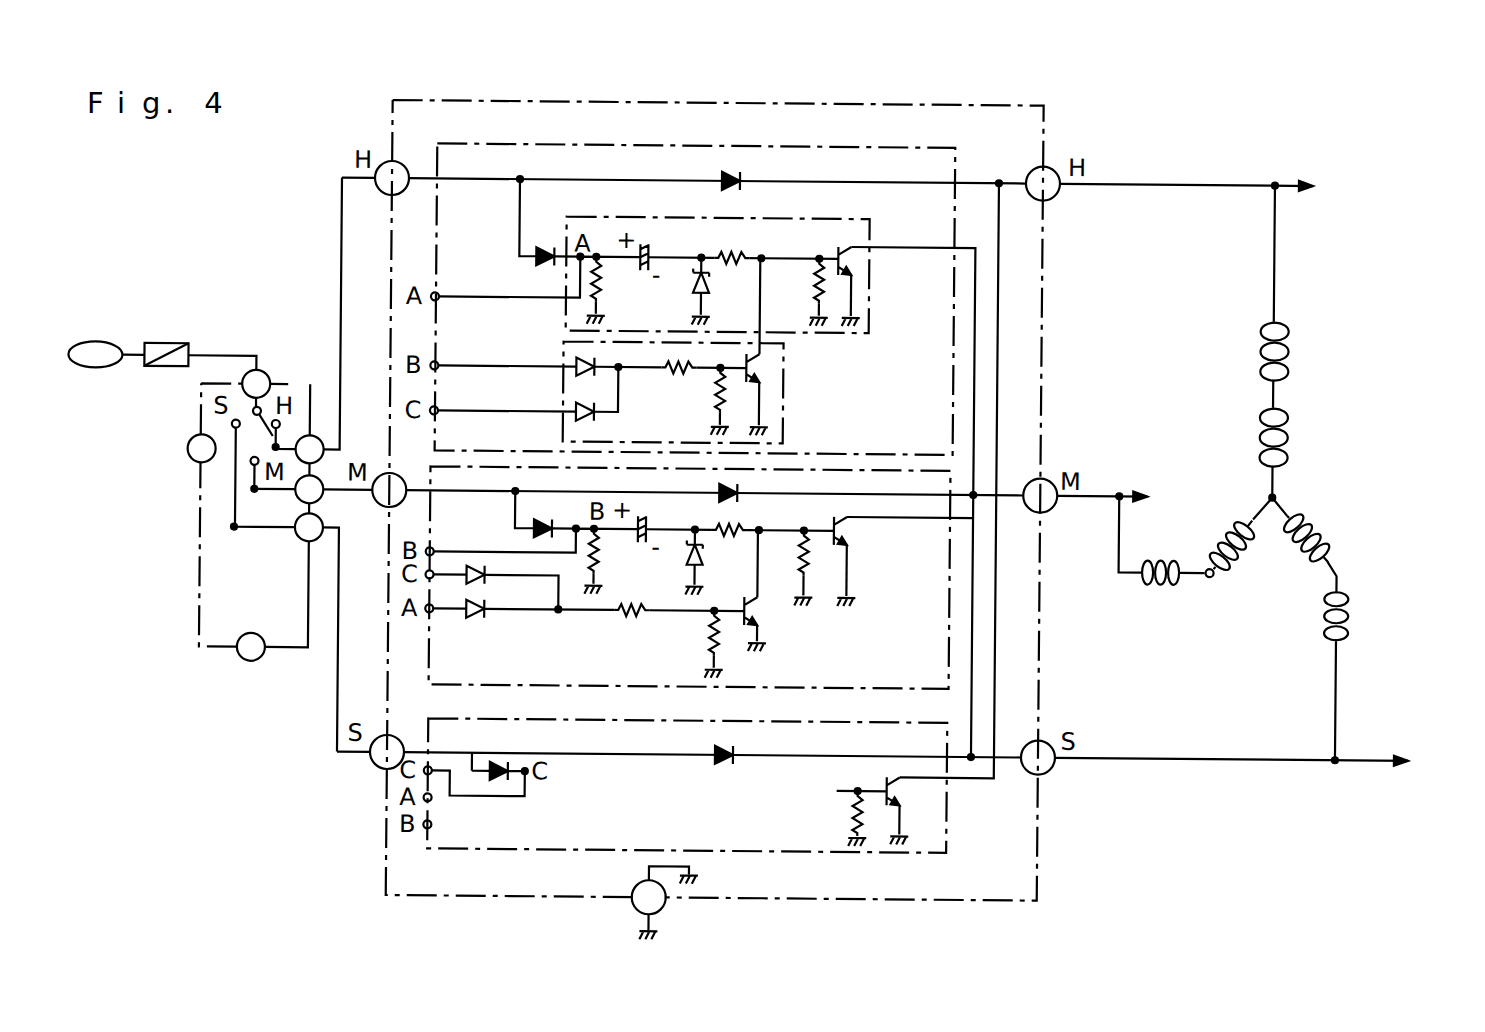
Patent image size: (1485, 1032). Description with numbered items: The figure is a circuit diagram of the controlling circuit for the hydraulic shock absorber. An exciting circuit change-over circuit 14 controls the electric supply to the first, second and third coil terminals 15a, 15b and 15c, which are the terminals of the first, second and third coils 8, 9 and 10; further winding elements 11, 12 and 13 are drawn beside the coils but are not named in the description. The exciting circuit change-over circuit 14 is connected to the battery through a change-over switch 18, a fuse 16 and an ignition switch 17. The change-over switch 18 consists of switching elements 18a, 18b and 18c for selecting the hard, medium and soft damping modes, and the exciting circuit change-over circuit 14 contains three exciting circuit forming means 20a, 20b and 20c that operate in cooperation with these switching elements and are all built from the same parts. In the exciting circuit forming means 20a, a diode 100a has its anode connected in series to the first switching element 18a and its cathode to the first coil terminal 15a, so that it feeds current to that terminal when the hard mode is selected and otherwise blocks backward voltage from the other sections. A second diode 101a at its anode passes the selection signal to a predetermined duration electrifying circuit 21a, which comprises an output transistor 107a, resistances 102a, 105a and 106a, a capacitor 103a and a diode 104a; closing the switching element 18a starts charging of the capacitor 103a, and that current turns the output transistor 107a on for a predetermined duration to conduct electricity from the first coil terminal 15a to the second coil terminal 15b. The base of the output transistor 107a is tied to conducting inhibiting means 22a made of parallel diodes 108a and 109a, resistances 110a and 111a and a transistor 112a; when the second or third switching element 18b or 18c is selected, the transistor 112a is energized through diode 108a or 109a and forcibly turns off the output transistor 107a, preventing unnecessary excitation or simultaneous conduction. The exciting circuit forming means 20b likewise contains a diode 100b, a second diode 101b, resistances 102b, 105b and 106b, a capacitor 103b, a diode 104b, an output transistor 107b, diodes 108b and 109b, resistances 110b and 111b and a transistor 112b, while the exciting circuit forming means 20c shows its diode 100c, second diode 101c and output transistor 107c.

The first coil 8 is at (1295, 338).
The second coil 9 is at (1162, 585).
The third coil 10 is at (1358, 613).
The armature winding 11 is at (1295, 424).
The armature winding 12 is at (1233, 521).
The armature winding 13 is at (1325, 520).
The exciting circuit change-over circuit 14 is at (1043, 140).
The first coil terminal 15a is at (1220, 179).
The second coil terminal 15b is at (1102, 491).
The third coil terminal 15c is at (1226, 750).
The fuse 16 is at (165, 343).
The ignition switch 17 is at (107, 343).
The change-over switch 18 is at (295, 385).
The first switching element 18a is at (273, 438).
The second switching element 18b is at (257, 477).
The third switching element 18c is at (237, 518).
The exciting circuit forming means 20a is at (957, 163).
The exciting circuit forming means 20b is at (953, 616).
The exciting circuit forming means 20c is at (952, 812).
The predetermined duration electrifying circuit 21a is at (837, 222).
The conducting inhibiting means 22a is at (788, 398).
The diode 100a is at (720, 169).
The second diode 101a is at (545, 243).
The resistance 102a is at (587, 292).
The capacitor 103a is at (647, 237).
The diode 104a is at (691, 283).
The resistance 105a is at (735, 253).
The resistance 106a is at (828, 292).
The output transistor 107a is at (845, 244).
The diode 108a is at (578, 362).
The diode 109a is at (578, 409).
The resistance 110a is at (666, 375).
The resistance 111a is at (737, 400).
The transistor 112a is at (770, 372).
The diode 100b is at (767, 506).
The diode 101b is at (527, 537).
The resistor 102b is at (607, 577).
The capacitor 103b is at (640, 547).
The zener diode 104b is at (717, 564).
The resistor 105b is at (740, 537).
The resistor 106b is at (815, 565).
The transistor 107b is at (850, 536).
The diode 108b is at (470, 584).
The diode 109b is at (475, 620).
The resistor 110b is at (625, 615).
The resistor 111b is at (727, 647).
The transistor 112b is at (770, 622).
The diode 100c is at (744, 747).
The diode 101c is at (497, 765).
The transistor 107c is at (892, 773).